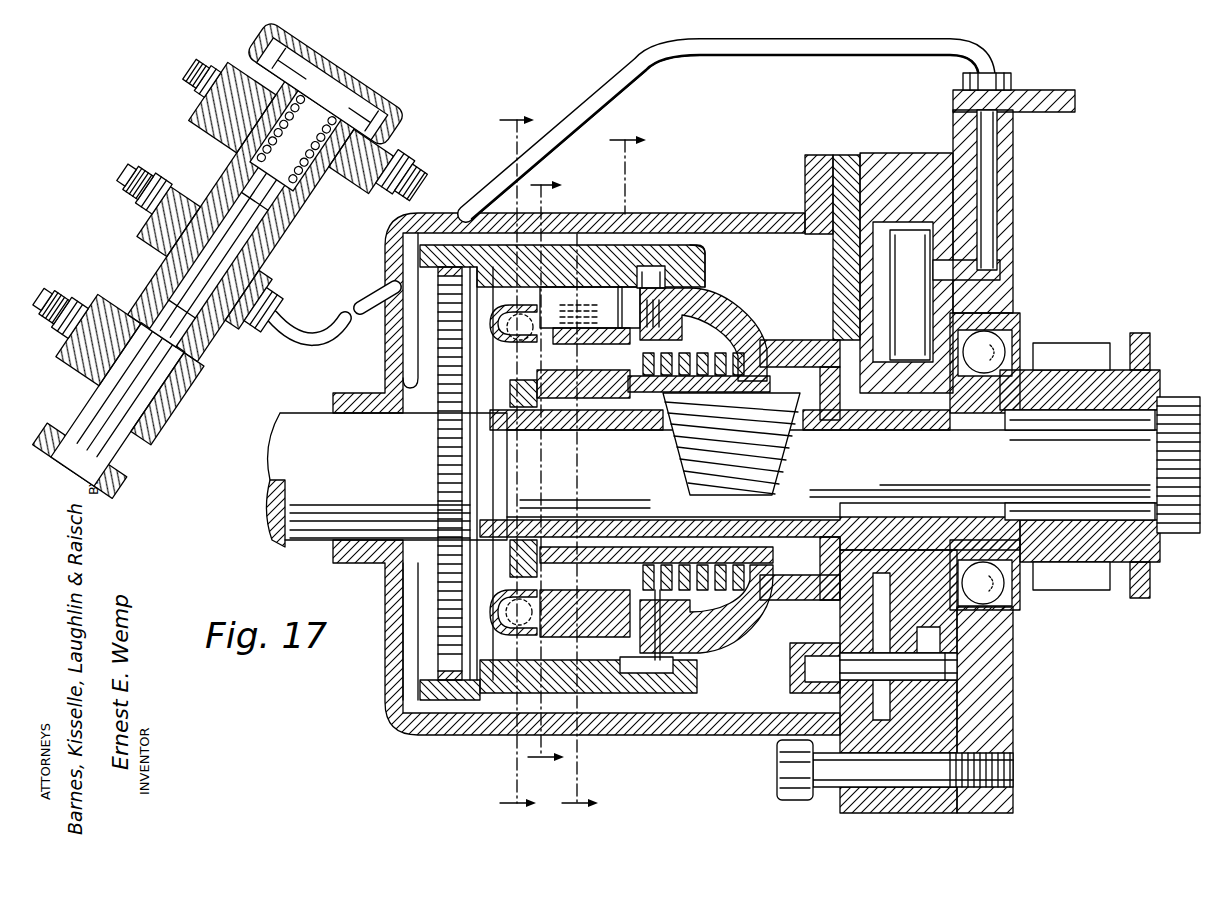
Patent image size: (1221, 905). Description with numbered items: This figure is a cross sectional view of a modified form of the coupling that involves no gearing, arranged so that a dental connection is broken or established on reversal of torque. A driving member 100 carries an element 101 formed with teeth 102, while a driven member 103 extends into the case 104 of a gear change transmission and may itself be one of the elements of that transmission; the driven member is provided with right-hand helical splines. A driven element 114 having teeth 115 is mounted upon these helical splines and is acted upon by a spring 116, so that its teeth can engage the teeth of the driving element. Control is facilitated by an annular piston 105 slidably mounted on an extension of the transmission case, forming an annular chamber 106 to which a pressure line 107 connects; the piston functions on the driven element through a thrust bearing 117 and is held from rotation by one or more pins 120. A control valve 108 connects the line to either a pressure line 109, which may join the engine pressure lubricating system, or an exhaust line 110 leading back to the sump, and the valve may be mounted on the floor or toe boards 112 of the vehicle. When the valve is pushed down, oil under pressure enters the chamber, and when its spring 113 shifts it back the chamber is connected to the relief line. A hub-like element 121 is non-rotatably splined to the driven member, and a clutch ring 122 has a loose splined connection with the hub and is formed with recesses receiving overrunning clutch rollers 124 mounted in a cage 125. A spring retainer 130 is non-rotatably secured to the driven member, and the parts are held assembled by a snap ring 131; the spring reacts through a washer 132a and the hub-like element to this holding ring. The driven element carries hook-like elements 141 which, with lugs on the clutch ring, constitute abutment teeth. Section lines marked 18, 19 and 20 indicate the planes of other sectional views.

The driving member 100 is at (291, 431).
The element 101 is at (600, 245).
The teeth 102 is at (699, 272).
The driven member 103 is at (1061, 378).
The case 104 is at (1013, 192).
The annular piston 105 is at (823, 205).
The annular chamber 106 is at (913, 240).
The pressure line 107 is at (726, 58).
The control valve 108 is at (246, 162).
The pressure line 109 is at (78, 272).
The exhaust line 110 is at (133, 165).
The toe boards 112 is at (184, 75).
The spring 113 is at (362, 93).
The driven element 114 is at (719, 306).
The teeth 115 is at (653, 275).
The spring 116 is at (716, 606).
The thrust bearing 117 is at (786, 598).
The pins 120 is at (948, 663).
The hub-like element 121 is at (581, 540).
The clutch ring 122 is at (548, 714).
The overrunning clutch rollers 124 is at (575, 290).
The cage 125 is at (490, 705).
The spring retainer 130 is at (495, 586).
The snap ring 131 is at (498, 408).
The washer 132a is at (642, 600).
The hook-like elements 141 is at (604, 693).
The section line 18 is at (508, 466).
The section line 19 is at (598, 475).
The section line 20 is at (543, 473).